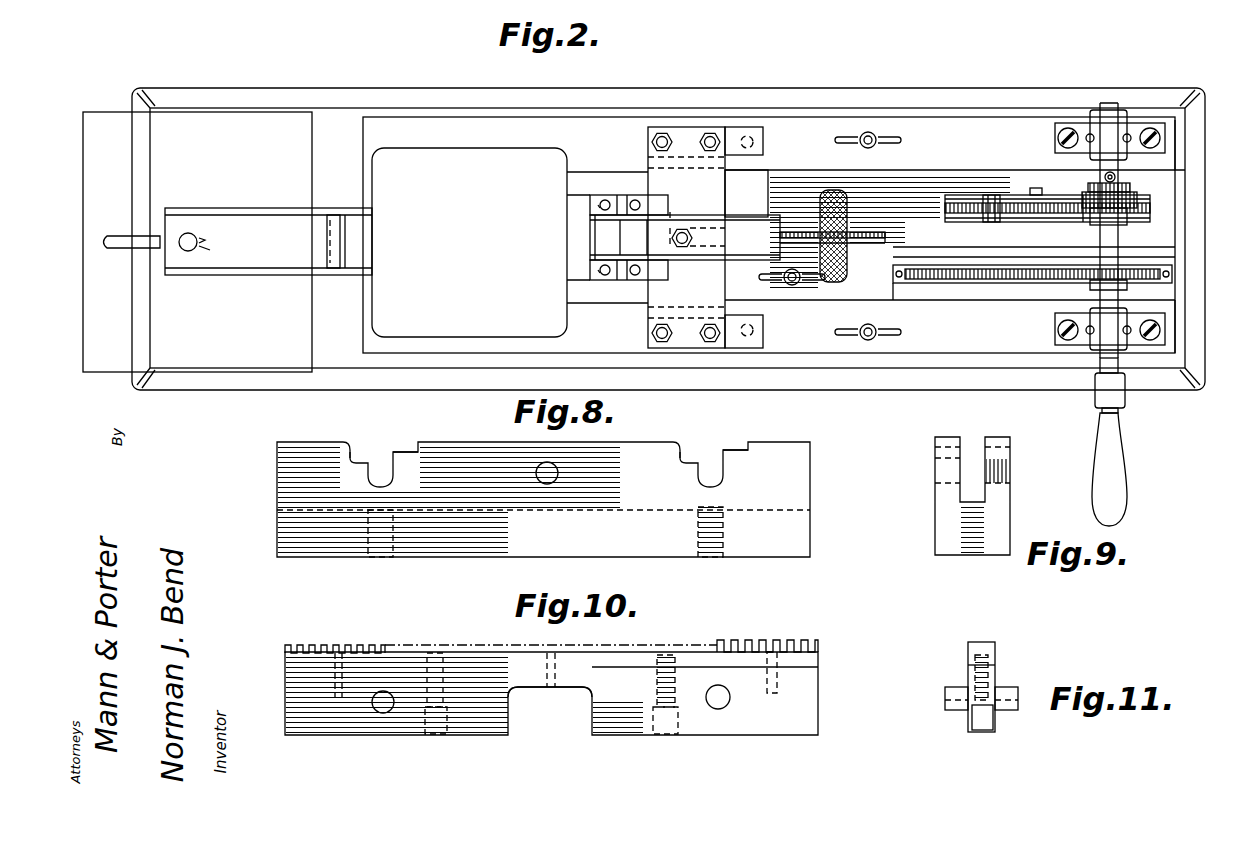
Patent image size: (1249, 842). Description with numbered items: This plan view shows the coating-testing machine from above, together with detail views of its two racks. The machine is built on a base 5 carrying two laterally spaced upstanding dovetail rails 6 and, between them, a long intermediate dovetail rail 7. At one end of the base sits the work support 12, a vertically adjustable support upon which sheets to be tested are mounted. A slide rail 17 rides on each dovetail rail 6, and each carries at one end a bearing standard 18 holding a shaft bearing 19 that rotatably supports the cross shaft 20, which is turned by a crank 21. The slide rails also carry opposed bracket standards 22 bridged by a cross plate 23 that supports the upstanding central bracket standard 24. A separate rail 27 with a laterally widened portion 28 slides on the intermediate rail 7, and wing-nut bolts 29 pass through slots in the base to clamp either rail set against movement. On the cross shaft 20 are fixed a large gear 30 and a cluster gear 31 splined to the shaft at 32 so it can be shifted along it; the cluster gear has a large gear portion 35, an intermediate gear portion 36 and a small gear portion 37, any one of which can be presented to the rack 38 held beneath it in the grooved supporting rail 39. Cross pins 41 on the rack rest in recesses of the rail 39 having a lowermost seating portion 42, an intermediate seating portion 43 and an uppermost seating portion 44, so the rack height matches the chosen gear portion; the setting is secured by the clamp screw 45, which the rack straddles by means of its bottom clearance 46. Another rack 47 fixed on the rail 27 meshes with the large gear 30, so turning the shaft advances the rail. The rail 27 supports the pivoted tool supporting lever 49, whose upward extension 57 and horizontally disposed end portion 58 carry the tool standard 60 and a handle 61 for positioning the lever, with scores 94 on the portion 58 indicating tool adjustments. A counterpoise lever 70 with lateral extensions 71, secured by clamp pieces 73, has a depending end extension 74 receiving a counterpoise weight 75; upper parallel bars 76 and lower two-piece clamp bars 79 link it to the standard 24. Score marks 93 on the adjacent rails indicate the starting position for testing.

In FIG. 2, the base 5 is at (940, 98).
In FIG. 2, the upstanding dovetail rails 6 is at (1180, 122).
In FIG. 2, the long intermediate dovetail rail 7 is at (1180, 278).
In FIG. 2, the work support 12 is at (118, 112).
In FIG. 2, the slide rail 17 is at (988, 115).
In FIG. 2, the bearing standard 18 is at (1142, 125).
In FIG. 2, the shaft bearing 19 is at (1092, 118).
In FIG. 2, the cross shaft 20 is at (1100, 368).
In FIG. 2, the crank 21 is at (1099, 438).
In FIG. 2, the bracket standards 22 is at (747, 135).
In FIG. 2, the cross plate 23 is at (665, 292).
In FIG. 2, the central bracket standard 24 is at (670, 215).
In FIG. 2, the rail 27 is at (920, 300).
In FIG. 2, the laterally widened portion 28 is at (758, 178).
In FIG. 2, the wing-nut bolts 29 is at (868, 132).
In FIG. 2, the large gear 30 is at (1140, 260).
In FIG. 2, the cluster gear 31 is at (1080, 173).
In FIG. 2, the spline 32 is at (1120, 235).
In FIG. 2, the large gear portion 35 is at (1090, 216).
In FIG. 2, the intermediate gear portion 36 is at (1138, 197).
In FIG. 2, the small gear portion 37 is at (1130, 186).
In FIG. 2, the rack 38 is at (945, 205).
In FIG. 10, the rack 38 is at (812, 664).
In FIG. 11, the rack 38 is at (1000, 660).
In FIG. 2, the grooved supporting rail 39 is at (957, 203).
In FIG. 8, the grooved supporting rail 39 is at (800, 492).
In FIG. 9, the grooved supporting rail 39 is at (943, 523).
In FIG. 2, the cross pins 41 is at (992, 225).
In FIG. 10, the cross pins 41 is at (383, 713).
In FIG. 11, the cross pins 41 is at (950, 710).
In FIG. 8, the lowermost seating portion 42 is at (380, 492).
In FIG. 8, the intermediate seating portion 43 is at (360, 462).
In FIG. 8, the uppermost seating portion 44 is at (415, 452).
In FIG. 2, the clamp screw 45 is at (1034, 188).
In FIG. 10, the bottom clearance 46 is at (555, 705).
In FIG. 2, the rack 47 is at (982, 284).
In FIG. 2, the tool supporting lever 49 is at (352, 276).
In FIG. 2, the upward extension 57 is at (335, 222).
In FIG. 2, the horizontally disposed end portion 58 is at (245, 222).
In FIG. 2, the tool standard 60 is at (188, 233).
In FIG. 2, the handle 61 is at (130, 236).
In FIG. 2, the counterpoise lever 70 is at (700, 225).
In FIG. 2, the lateral extensions 71 is at (600, 204).
In FIG. 2, the clamp pieces 73 is at (642, 198).
In FIG. 2, the depending end extension 74 is at (873, 244).
In FIG. 2, the counterpoise weight 75 is at (832, 190).
In FIG. 2, the upper parallel bar 76 is at (575, 202).
In FIG. 2, the lower two-piece clamp bars 79 is at (575, 238).
In FIG. 2, the score marks 93 is at (1026, 299).
In FIG. 2, the scores 94 is at (210, 242).